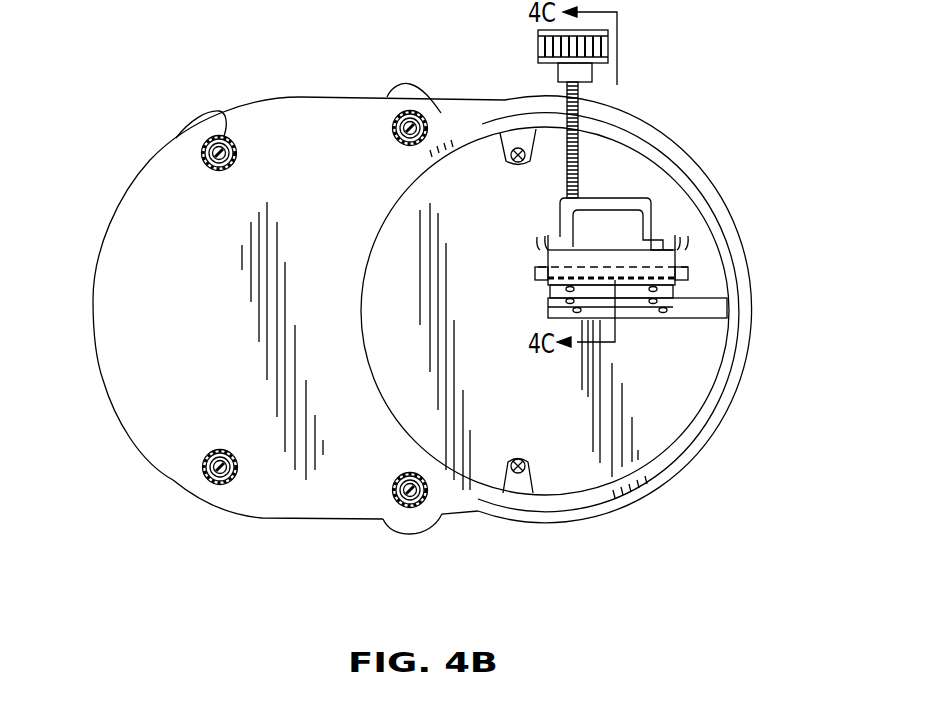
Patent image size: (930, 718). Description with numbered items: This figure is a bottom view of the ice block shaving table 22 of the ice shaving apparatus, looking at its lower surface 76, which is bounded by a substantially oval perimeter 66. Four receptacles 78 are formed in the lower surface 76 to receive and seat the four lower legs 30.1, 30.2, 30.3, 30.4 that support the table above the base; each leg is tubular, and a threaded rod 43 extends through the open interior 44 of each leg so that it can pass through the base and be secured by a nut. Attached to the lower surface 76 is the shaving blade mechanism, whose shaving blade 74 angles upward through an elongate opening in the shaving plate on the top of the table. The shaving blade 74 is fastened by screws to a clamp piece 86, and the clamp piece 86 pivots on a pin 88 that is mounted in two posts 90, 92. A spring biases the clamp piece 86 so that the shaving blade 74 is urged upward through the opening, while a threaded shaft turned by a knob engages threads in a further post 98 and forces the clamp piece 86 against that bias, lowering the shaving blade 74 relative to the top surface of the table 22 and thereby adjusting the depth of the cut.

The ice block shaving table 22 is at (125, 428).
The lower leg 30.1 is at (410, 507).
The lower leg 30.2 is at (235, 482).
The lower leg 30.3 is at (203, 152).
The lower leg 30.4 is at (393, 115).
The threaded rod 43 is at (206, 168).
The open interior 44 is at (205, 142).
The perimeter 66 is at (95, 272).
The shaving blade 74 is at (703, 318).
The lower surface 76 is at (262, 128).
The receptacle 78 is at (219, 112).
The clamp piece 86 is at (617, 225).
The pin 88 is at (648, 262).
The post 90 is at (677, 258).
The post 92 is at (548, 258).
The post 98 is at (587, 201).